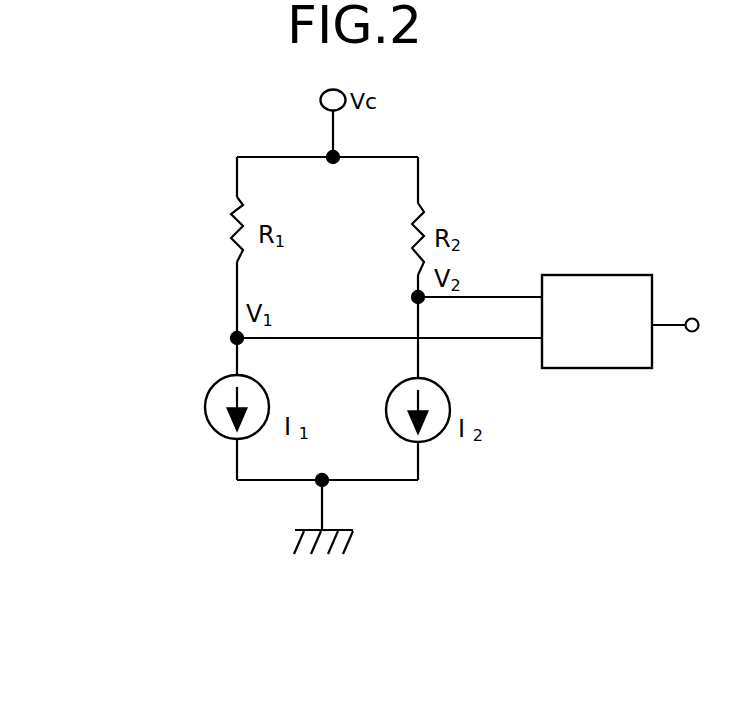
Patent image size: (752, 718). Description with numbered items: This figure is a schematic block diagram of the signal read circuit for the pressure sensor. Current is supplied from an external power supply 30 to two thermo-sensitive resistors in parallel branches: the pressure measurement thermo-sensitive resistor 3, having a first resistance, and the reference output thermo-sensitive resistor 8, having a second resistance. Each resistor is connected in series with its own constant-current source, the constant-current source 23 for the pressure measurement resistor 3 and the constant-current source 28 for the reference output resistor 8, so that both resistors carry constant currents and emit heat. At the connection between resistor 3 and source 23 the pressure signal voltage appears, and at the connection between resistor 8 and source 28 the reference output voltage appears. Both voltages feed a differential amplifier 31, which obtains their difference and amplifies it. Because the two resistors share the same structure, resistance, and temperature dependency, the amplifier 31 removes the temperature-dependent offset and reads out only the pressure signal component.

The pressure measurement thermo-sensitive resistor 3 is at (223, 222).
The reference output thermo-sensitive resistor 8 is at (422, 208).
The constant-current source 23 is at (207, 398).
The constant-current source 28 is at (428, 420).
The external power supply 30 is at (357, 125).
The differential amplifier 31 is at (570, 312).